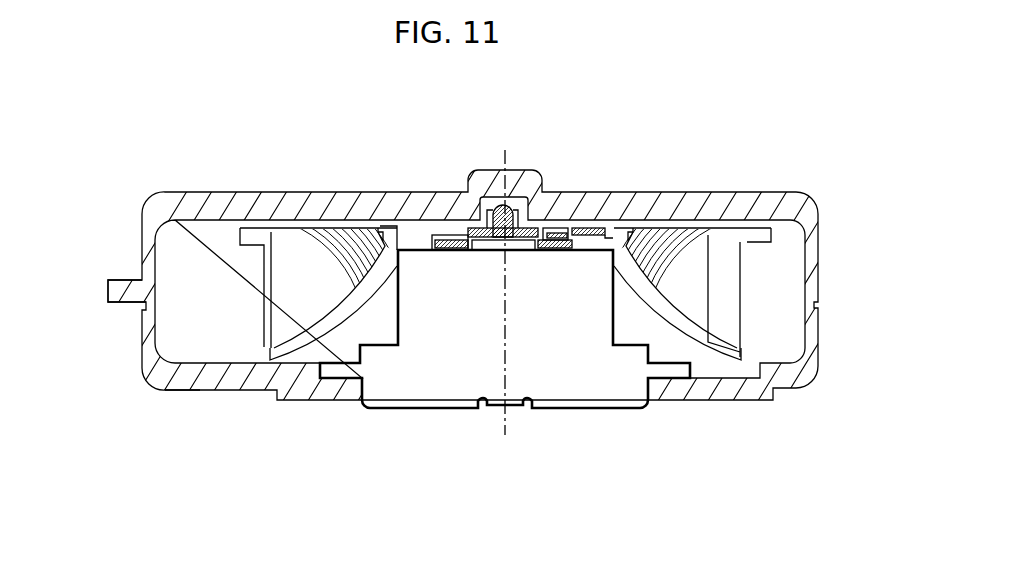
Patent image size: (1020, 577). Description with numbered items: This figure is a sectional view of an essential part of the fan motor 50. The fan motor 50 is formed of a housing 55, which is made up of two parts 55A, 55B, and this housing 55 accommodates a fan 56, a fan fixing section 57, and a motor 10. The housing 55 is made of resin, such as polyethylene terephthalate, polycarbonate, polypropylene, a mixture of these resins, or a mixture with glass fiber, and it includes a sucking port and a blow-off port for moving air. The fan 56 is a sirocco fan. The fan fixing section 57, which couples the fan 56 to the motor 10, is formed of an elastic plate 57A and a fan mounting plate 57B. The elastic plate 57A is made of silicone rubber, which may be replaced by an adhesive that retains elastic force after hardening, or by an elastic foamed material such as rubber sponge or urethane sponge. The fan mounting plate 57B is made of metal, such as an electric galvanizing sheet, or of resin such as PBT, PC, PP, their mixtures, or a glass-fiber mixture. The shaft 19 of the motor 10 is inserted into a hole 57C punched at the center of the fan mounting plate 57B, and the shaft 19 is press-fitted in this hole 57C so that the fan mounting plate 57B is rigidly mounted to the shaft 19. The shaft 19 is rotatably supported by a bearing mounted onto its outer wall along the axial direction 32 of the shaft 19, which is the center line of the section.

The motor 10 is at (397, 382).
The shaft 19 is at (493, 205).
The axial direction 32 is at (504, 150).
The fan motor 50 is at (783, 184).
The housing 55 is at (143, 392).
The housing part 55A is at (122, 288).
The housing part 55B is at (178, 417).
The fan 56 is at (293, 263).
The fan fixing section 57 is at (562, 120).
The elastic plate 57A is at (555, 232).
The fan mounting plate 57B is at (598, 230).
The hole 57C is at (520, 208).